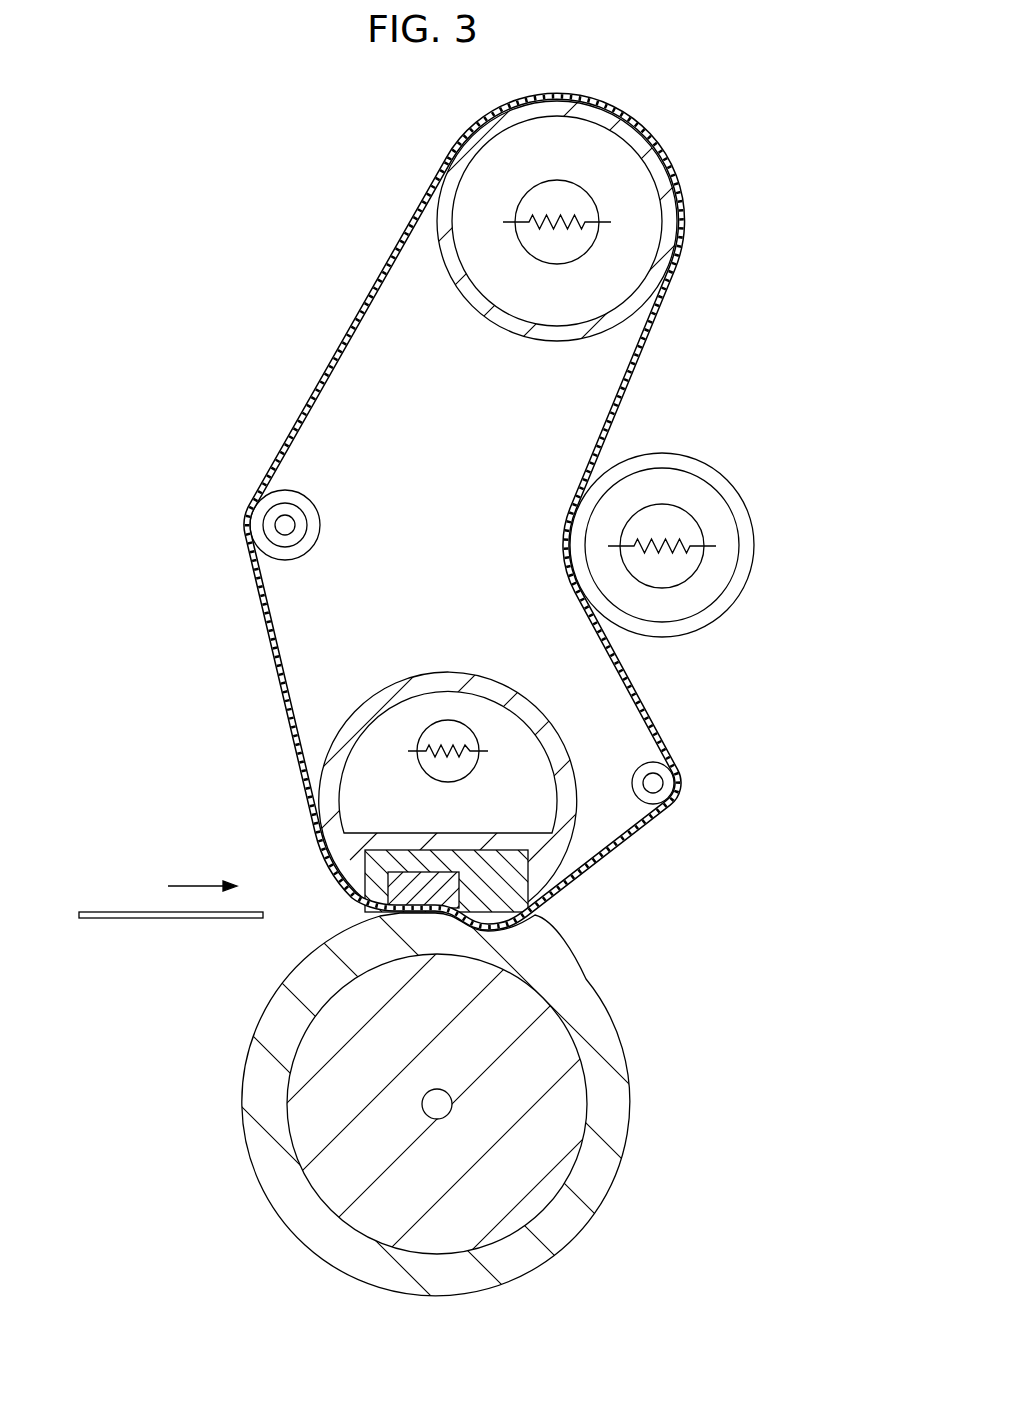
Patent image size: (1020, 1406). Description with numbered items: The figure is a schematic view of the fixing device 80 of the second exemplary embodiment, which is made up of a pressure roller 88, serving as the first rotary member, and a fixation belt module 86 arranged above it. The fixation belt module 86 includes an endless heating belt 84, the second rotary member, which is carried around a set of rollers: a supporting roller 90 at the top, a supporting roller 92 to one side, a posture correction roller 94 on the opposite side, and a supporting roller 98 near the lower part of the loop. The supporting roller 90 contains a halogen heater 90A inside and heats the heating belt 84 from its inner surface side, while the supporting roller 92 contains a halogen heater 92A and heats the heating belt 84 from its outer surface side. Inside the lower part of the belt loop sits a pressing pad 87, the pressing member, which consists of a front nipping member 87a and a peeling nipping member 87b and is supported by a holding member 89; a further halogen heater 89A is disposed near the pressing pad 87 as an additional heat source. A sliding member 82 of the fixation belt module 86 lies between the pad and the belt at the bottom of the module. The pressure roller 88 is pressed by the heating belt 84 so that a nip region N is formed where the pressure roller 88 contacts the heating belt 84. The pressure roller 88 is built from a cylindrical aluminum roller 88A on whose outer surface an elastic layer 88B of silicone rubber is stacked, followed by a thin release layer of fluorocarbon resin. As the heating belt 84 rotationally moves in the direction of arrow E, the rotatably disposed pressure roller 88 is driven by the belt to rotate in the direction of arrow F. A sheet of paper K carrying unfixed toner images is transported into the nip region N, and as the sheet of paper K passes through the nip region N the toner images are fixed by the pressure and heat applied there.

The fixing device 80 is at (172, 313).
The sliding member 82 is at (545, 900).
The heating belt 84 is at (348, 335).
The fixation belt module 86 is at (190, 466).
The pressing pad 87 is at (501, 849).
The front nipping member 87a is at (403, 885).
The peeling nipping member 87b is at (497, 870).
The pressure roller 88 is at (473, 1110).
The cylindrical aluminum roller 88A is at (560, 1135).
The elastic layer 88B is at (613, 1087).
The holding member 89 is at (625, 460).
The halogen heater 89A is at (448, 720).
The supporting roller 90 is at (605, 225).
The halogen heater 90A is at (557, 264).
The supporting roller 92 is at (795, 540).
The halogen heater 92A is at (681, 591).
The posture correction roller 94 is at (308, 508).
The supporting roller 98 is at (663, 783).
The sheet of paper K is at (116, 918).
The nip region N is at (339, 904).
The arrow E is at (240, 625).
The arrow F is at (230, 1010).